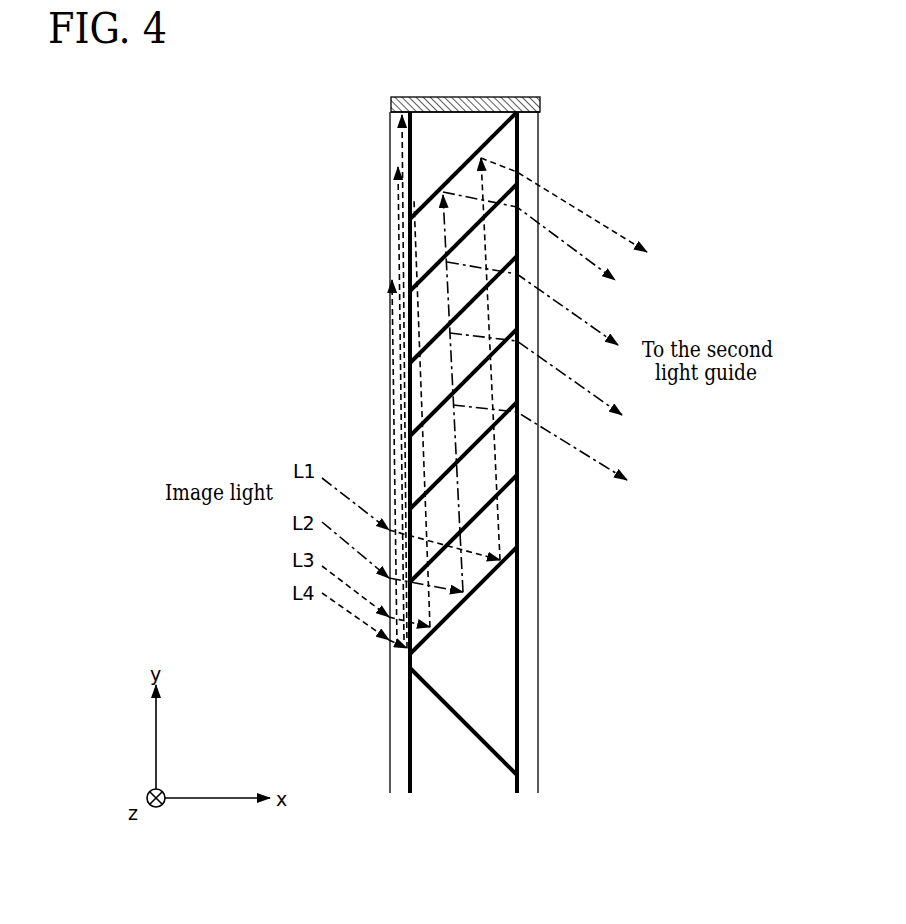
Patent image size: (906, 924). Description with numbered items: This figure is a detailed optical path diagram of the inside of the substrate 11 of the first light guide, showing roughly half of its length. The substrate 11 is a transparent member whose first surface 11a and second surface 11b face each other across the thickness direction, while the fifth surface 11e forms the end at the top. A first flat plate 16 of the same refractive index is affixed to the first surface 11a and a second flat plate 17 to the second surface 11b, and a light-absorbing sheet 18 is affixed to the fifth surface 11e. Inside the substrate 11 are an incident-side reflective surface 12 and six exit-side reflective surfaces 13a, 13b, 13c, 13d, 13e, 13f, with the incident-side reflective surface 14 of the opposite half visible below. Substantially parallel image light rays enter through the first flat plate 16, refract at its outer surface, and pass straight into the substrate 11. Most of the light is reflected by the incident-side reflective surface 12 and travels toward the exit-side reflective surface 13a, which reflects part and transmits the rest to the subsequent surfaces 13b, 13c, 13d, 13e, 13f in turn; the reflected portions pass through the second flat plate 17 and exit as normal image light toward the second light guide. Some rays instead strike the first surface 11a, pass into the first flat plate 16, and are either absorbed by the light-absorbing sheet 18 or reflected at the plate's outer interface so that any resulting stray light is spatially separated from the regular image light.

The substrate 11 is at (473, 460).
The first surface 11a is at (408, 765).
The second surface 11b is at (518, 773).
The fifth surface 11e is at (421, 97).
The incident-side reflective surface 12 is at (503, 561).
The exit-side reflective surface 13a is at (487, 505).
The exit-side reflective surface 13b is at (497, 422).
The exit-side reflective surface 13c is at (424, 422).
The exit-side reflective surface 13d is at (424, 350).
The exit-side reflective surface 13e is at (424, 278).
The exit-side reflective surface 13f is at (483, 147).
The incident-side reflective surface 14 is at (487, 748).
The first flat plate 16 is at (390, 250).
The second flat plate 17 is at (538, 125).
The light-absorbing sheet 18 is at (513, 97).